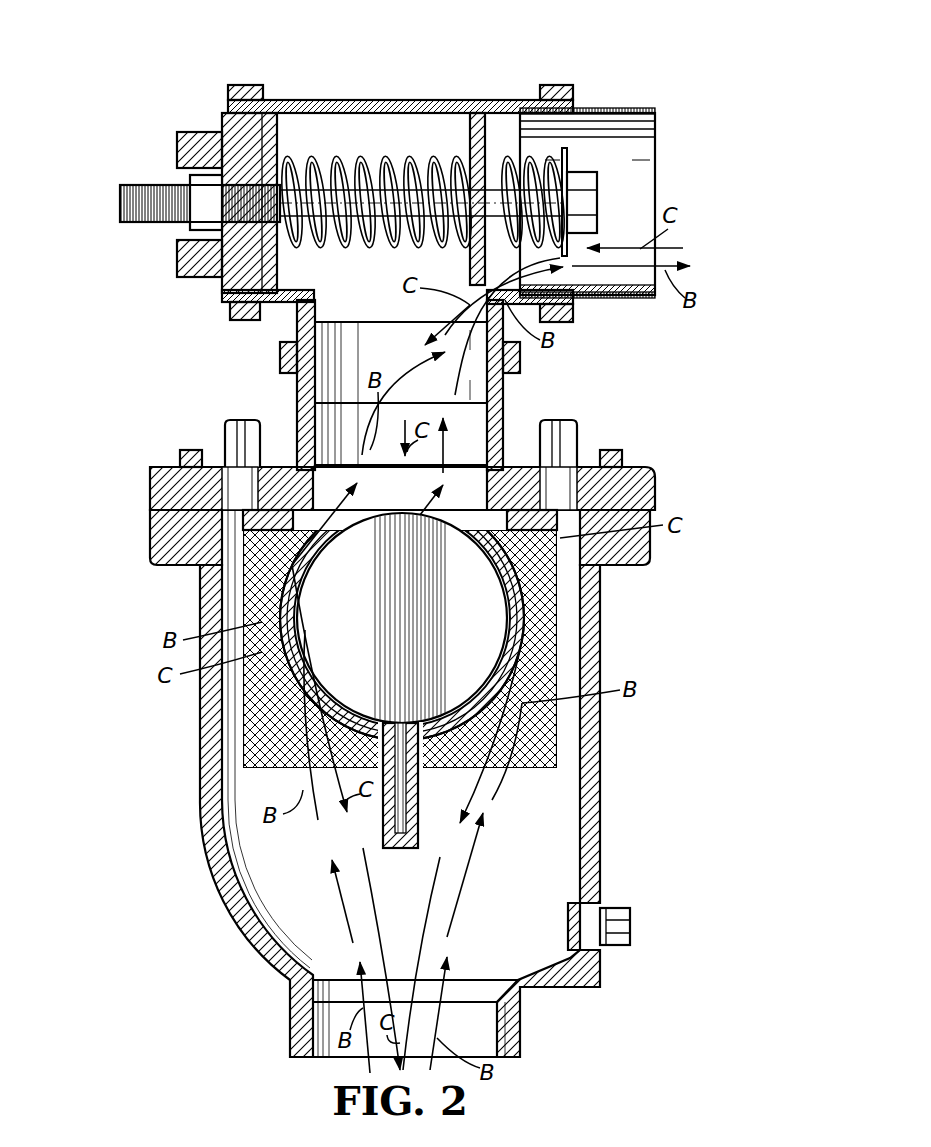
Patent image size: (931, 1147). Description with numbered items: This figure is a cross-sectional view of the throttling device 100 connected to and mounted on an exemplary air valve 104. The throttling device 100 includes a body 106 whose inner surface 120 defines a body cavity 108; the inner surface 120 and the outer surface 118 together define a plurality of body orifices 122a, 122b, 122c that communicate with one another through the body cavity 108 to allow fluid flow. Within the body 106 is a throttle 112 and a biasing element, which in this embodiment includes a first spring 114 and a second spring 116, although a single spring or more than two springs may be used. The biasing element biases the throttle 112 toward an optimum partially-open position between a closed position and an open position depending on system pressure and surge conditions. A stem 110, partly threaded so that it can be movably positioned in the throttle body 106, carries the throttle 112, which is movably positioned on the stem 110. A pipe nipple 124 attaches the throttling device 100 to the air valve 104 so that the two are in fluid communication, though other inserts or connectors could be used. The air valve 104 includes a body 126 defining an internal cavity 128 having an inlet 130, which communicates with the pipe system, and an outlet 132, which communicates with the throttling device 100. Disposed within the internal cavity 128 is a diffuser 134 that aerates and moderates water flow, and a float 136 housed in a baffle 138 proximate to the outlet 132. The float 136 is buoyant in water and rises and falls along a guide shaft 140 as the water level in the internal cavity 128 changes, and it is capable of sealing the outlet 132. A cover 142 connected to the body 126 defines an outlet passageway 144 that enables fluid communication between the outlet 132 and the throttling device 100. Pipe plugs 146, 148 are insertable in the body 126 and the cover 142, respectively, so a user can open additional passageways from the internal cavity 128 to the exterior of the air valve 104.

The throttling device 100 is at (707, 245).
The air valve 104 is at (633, 615).
The body 106 is at (433, 118).
The body cavity 108 is at (357, 125).
The stem 110 is at (218, 233).
The throttle 112 is at (505, 160).
The first spring 114 is at (335, 160).
The second spring 116 is at (562, 85).
The outer surface 118 is at (290, 100).
The inner surface 120 is at (468, 117).
The orifice 122a is at (222, 106).
The orifice 122b is at (577, 108).
The orifice 122c is at (300, 377).
The pipe nipple 124 is at (495, 390).
The body 126 is at (588, 803).
The internal cavity 128 is at (572, 763).
The inlet 130 is at (475, 1040).
The outlet 132 is at (152, 488).
The diffuser 134 is at (240, 750).
The float 136 is at (318, 618).
The baffle 138 is at (240, 675).
The guide shaft 140 is at (395, 807).
The cover 142 is at (640, 466).
The outlet passageway 144 is at (463, 487).
The pipe plug 146 is at (627, 930).
The pipe plug 148 is at (233, 437).